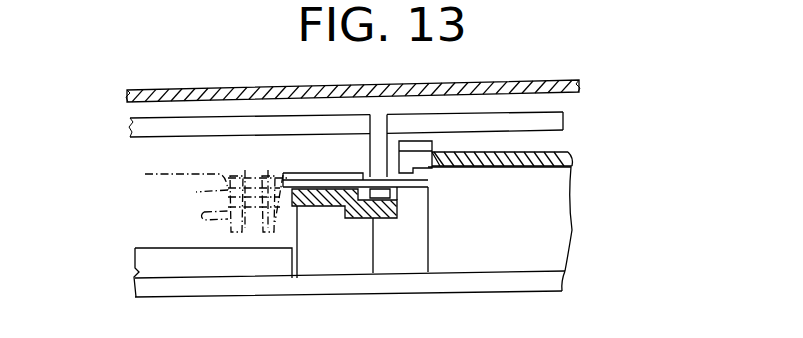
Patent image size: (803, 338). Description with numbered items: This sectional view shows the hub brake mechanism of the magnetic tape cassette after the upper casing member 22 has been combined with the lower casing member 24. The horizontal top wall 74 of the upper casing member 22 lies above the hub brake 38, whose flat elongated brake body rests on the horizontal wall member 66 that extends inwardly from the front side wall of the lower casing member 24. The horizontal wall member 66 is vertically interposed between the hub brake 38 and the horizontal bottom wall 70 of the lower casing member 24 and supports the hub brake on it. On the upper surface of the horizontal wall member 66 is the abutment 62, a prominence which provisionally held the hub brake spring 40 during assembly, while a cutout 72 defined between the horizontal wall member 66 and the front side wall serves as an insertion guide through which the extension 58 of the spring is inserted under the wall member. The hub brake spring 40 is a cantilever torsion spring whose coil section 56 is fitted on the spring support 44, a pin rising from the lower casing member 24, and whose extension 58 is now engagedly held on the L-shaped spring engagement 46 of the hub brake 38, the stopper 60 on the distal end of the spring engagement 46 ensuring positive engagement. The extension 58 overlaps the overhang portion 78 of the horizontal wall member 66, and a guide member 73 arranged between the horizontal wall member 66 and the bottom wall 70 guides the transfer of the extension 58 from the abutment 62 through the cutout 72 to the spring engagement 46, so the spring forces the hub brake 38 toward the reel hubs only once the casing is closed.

The upper casing member 22 is at (275, 77).
The horizontal top wall 74 is at (546, 84).
The hub brake 38 is at (477, 115).
The overhang portion 78 is at (398, 130).
The spring engagement 46 is at (370, 154).
The abutment 62 is at (433, 156).
The horizontal wall member 66 is at (562, 152).
The hub brake spring 40 is at (324, 171).
The guide member 73 is at (324, 202).
The extension 58 is at (408, 184).
The stopper 60 is at (383, 200).
The cutout 72 is at (425, 189).
The lower casing member 24 is at (538, 262).
The horizontal bottom wall 70 is at (490, 270).
The coil section 56 is at (210, 194).
The spring support 44 is at (258, 172).